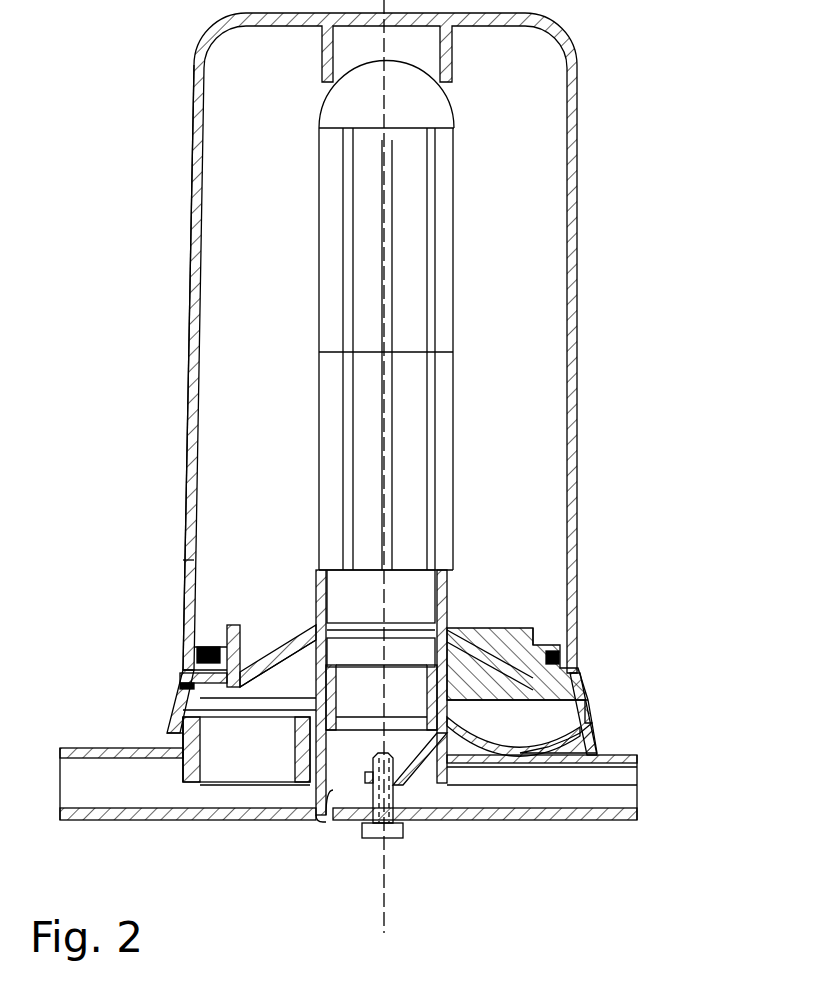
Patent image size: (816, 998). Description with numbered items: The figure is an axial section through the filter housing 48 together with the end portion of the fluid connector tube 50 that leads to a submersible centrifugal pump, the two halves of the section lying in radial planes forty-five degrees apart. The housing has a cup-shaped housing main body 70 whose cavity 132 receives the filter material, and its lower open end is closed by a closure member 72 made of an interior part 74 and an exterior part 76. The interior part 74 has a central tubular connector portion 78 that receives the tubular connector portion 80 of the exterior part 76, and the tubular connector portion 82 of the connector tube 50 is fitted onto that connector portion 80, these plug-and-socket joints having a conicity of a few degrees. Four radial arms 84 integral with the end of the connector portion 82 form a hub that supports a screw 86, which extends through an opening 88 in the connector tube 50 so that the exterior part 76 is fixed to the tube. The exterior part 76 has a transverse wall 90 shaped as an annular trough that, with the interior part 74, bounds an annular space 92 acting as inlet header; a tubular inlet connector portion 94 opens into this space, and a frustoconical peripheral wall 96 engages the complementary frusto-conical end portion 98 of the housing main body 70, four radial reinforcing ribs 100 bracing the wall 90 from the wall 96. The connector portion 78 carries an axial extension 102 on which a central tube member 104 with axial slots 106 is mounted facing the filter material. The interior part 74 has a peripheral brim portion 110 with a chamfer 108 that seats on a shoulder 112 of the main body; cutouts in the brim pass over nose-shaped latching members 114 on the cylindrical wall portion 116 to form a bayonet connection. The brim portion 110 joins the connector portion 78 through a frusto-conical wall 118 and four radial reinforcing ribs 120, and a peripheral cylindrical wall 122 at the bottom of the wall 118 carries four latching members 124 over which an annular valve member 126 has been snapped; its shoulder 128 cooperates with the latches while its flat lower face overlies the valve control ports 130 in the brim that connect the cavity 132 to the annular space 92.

The filter housing 48 is at (193, 117).
The housing main body 70 is at (190, 275).
The cavity 132 is at (226, 298).
The axial slots 106 is at (430, 288).
The central tube member 104 is at (449, 407).
The closure member 72 is at (465, 505).
The axial extension 102 is at (452, 566).
The tubular connector portion 82 is at (320, 826).
The tubular connector portion 80 is at (340, 738).
The connector tube 50 is at (584, 830).
The radial reinforcing ribs 100 is at (548, 787).
The transverse wall 90 is at (500, 770).
The valve control ports 130 is at (249, 740).
The tubular inlet connector portion 94 is at (212, 790).
The frusto-conical wall 118 is at (270, 628).
The central tubular connector portion 78 is at (310, 665).
The shoulder 112 is at (172, 668).
The latching members 124 is at (218, 645).
The peripheral cylindrical wall 122 is at (245, 627).
The peripheral brim portion 110 is at (168, 713).
The cylindrical wall portion 116 is at (168, 700).
The chamfer 108 is at (172, 688).
The annular valve member 126 is at (178, 652).
The shoulder 128 is at (185, 560).
The exterior part 76 is at (585, 676).
The interior part 74 is at (498, 637).
The radial reinforcing ribs 120 is at (540, 627).
The annular space 92 is at (560, 655).
The latching members 114 is at (548, 722).
The frustoconical peripheral wall 96 is at (590, 752).
The frusto-conical end portion 98 is at (588, 735).
The radial arms 84 is at (418, 778).
The opening 88 is at (386, 840).
The screw 86 is at (364, 840).